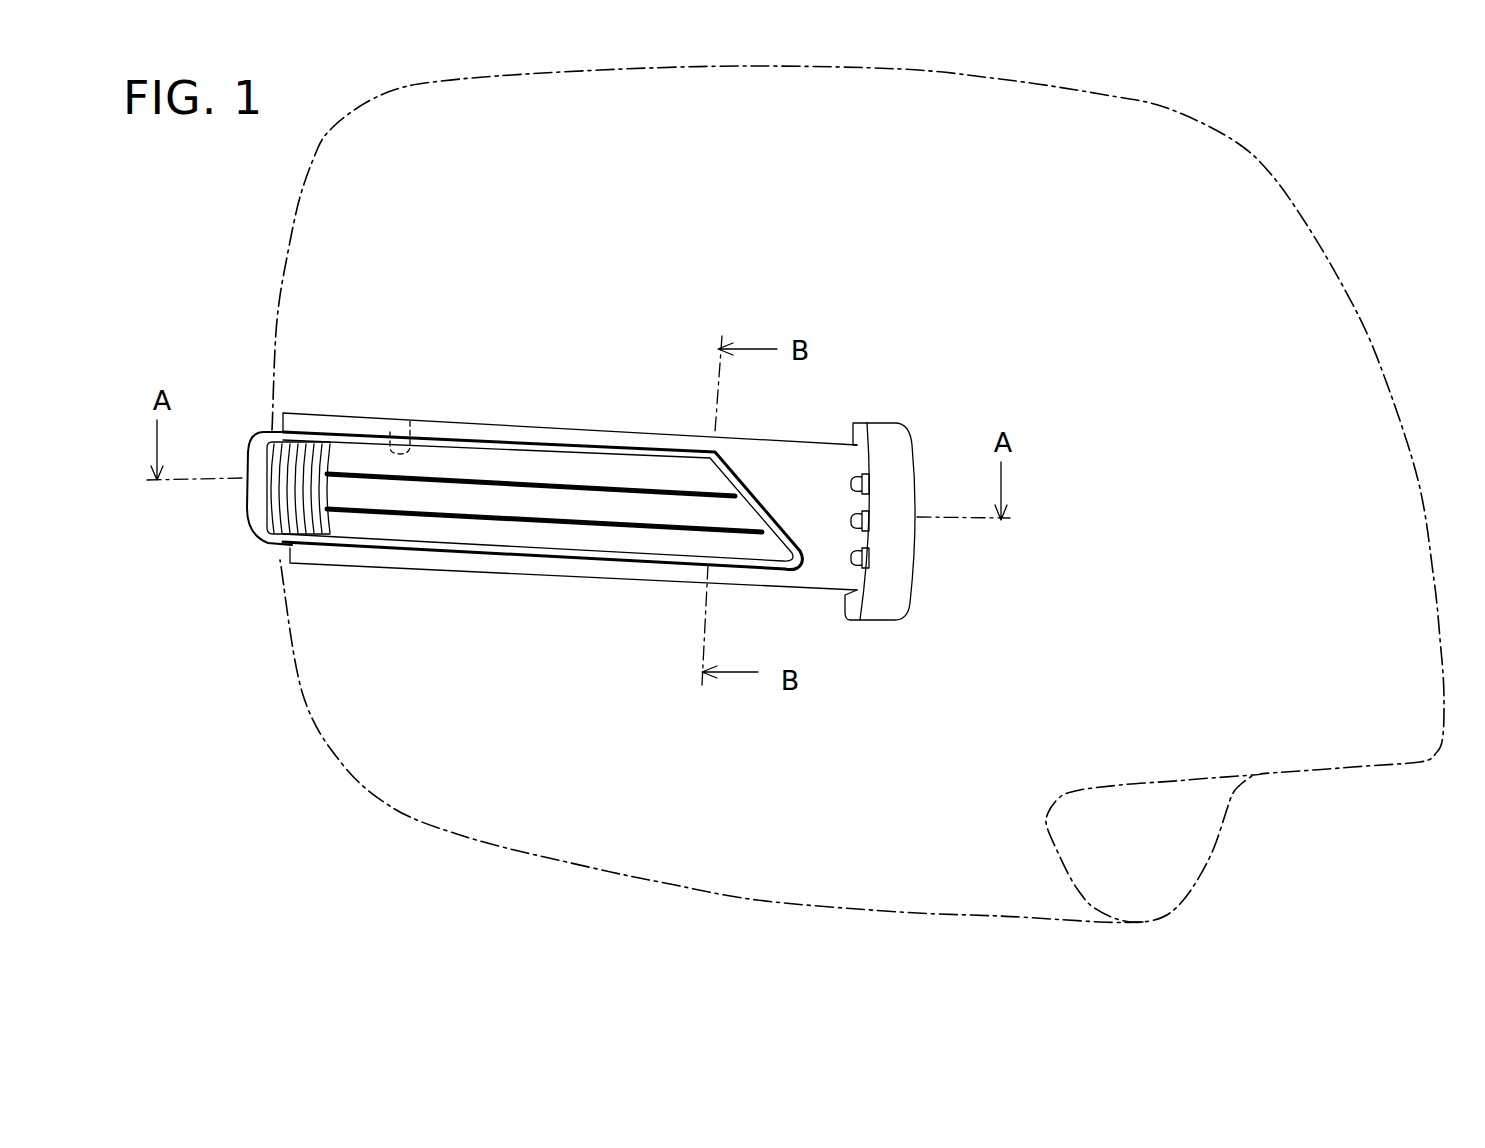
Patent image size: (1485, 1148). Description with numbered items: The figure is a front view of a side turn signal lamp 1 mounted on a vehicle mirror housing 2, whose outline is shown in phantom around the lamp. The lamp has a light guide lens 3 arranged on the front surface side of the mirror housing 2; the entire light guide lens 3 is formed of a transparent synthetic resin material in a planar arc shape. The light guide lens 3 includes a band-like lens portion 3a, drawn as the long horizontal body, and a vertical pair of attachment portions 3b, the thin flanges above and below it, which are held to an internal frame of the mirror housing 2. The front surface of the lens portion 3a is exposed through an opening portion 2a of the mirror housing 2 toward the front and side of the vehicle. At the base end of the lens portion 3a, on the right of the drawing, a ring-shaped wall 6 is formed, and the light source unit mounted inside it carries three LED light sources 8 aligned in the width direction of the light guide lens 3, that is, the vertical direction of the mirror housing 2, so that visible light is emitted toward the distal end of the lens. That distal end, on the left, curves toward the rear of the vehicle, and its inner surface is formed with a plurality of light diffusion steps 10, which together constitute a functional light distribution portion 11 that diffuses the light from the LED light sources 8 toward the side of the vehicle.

The side turn signal lamp 1 is at (608, 312).
The mirror housing 2 is at (1263, 158).
The opening portion 2a is at (407, 420).
The light guide lens 3 is at (627, 433).
The lens portion 3a is at (623, 545).
The attachment portions 3b is at (527, 430).
The ring-shaped wall 6 is at (873, 610).
The LED light sources 8 is at (872, 482).
The light diffusion steps 10 is at (273, 512).
The functional light distribution portion 11 is at (247, 423).